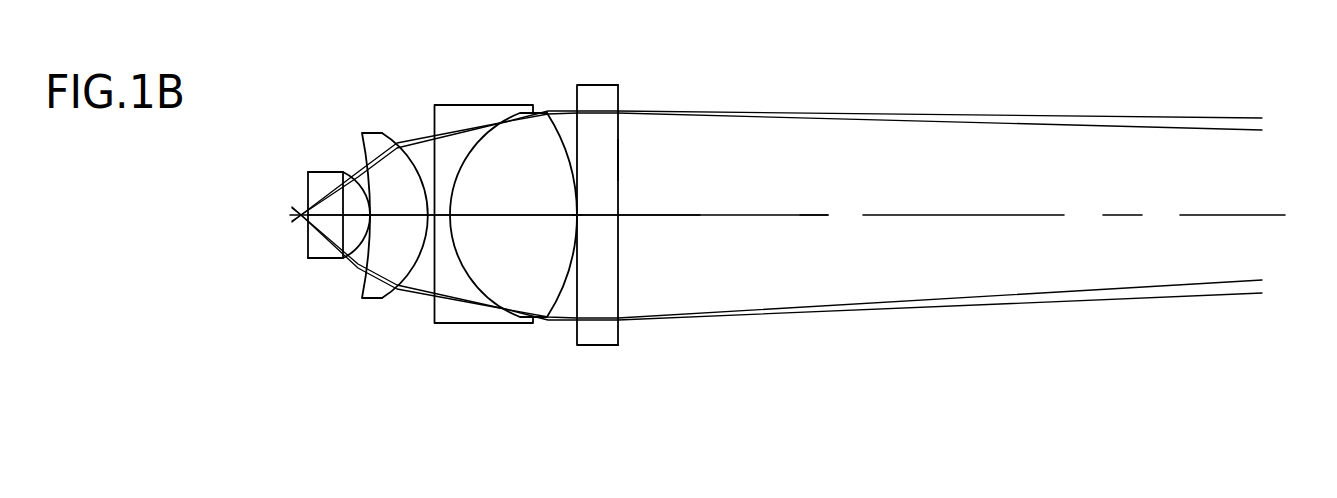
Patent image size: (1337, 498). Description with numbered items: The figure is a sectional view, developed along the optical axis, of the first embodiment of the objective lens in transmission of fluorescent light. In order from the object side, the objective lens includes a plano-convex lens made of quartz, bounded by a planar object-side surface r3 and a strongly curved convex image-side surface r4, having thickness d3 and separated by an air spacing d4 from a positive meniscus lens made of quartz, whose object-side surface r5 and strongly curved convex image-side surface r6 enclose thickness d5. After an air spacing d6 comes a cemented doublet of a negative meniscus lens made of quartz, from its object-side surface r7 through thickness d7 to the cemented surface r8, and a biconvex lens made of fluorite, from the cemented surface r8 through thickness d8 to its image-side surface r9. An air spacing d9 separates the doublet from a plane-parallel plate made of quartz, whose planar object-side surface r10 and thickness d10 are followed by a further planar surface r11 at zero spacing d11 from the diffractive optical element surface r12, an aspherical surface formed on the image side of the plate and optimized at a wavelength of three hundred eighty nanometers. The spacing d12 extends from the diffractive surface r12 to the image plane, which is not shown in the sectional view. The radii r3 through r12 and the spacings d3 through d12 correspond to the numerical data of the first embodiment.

The radius of curvature of object-side surface of plano-convex lens r3 is at (308, 193).
The radius of curvature of image-side surface of plano-convex lens r4 is at (352, 172).
The radius of curvature of object-side surface of positive meniscus lens r5 is at (365, 182).
The radius of curvature of image-side surface of positive meniscus lens r6 is at (422, 192).
The radius of curvature of object-side surface of negative meniscus lens r7 is at (432, 210).
The radius of curvature of cemented surface r8 is at (473, 150).
The radius of curvature of image-side surface of biconvex lens r9 is at (572, 178).
The radius of curvature of object-side surface of plane-parallel plate r10 is at (577, 99).
The radius of curvature of intermediate surface of plane-parallel plate r11 is at (620, 123).
The radius of curvature of diffractive optical element surface r12 is at (620, 158).
The thickness of plano-convex lens d3 is at (332, 218).
The spacing between plano-convex lens and positive meniscus lens d4 is at (365, 220).
The thickness of positive meniscus lens d5 is at (397, 218).
The spacing between positive meniscus lens and cemented doublet d6 is at (431, 218).
The thickness of negative meniscus lens d7 is at (443, 218).
The thickness of biconvex lens d8 is at (503, 218).
The spacing between cemented doublet and plane-parallel plate d9 is at (577, 217).
The thickness of plane-parallel plate d10 is at (600, 217).
The spacing to diffractive optical element surface d11 is at (618, 217).
The spacing between diffractive optical element and image plane d12 is at (855, 215).